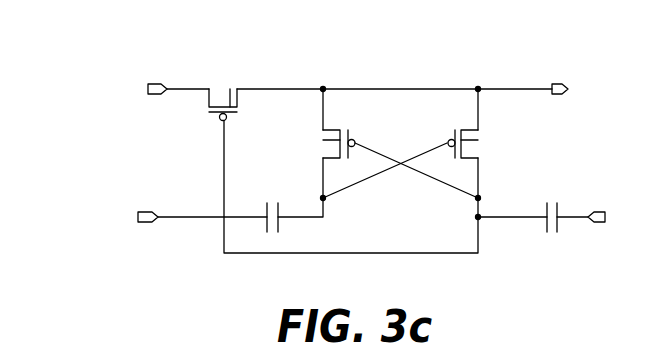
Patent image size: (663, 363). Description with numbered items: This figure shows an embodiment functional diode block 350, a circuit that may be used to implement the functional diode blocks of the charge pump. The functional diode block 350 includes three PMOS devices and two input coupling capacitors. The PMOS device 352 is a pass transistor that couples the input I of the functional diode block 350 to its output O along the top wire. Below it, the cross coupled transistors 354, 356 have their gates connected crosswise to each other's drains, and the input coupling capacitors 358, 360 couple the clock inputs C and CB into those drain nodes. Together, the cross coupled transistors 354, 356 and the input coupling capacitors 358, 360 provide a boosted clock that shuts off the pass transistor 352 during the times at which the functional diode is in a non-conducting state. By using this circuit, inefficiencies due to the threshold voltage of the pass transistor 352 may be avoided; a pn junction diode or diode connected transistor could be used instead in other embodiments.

The functional diode block 350 is at (94, 58).
The PMOS device 352 is at (216, 88).
The cross coupled transistor 354 is at (325, 154).
The cross coupled transistor 356 is at (475, 153).
The input coupling capacitor 358 is at (271, 202).
The input coupling capacitor 360 is at (545, 203).